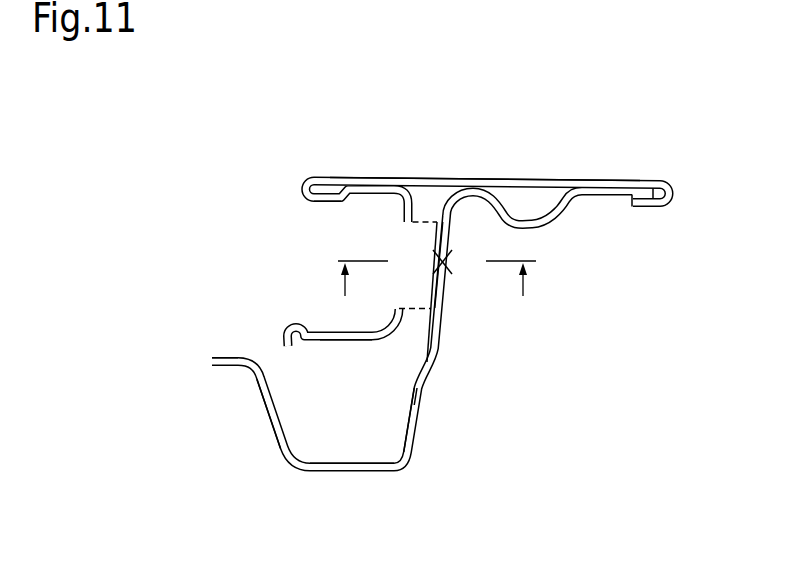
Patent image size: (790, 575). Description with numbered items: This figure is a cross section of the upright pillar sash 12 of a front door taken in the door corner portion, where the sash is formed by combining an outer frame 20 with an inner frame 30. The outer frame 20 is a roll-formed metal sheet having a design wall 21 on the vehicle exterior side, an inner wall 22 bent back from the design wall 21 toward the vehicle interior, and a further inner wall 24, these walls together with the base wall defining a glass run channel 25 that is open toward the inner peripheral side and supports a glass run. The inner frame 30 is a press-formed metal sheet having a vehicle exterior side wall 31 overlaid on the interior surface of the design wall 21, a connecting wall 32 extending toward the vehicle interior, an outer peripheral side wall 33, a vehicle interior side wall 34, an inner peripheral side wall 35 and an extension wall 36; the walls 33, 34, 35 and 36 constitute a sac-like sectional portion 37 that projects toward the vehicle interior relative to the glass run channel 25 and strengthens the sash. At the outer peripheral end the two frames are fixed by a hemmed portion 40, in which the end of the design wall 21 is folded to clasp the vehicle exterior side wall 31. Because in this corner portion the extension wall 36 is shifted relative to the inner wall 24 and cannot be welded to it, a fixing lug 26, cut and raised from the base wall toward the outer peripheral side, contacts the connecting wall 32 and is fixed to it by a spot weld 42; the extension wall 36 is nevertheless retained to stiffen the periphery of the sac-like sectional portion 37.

The upright pillar sash 12 is at (660, 154).
The outer frame 20 is at (479, 213).
The design wall 21 is at (517, 179).
The inner wall 22 is at (362, 193).
The inner wall 24 is at (330, 332).
The glass run channel 25 is at (349, 356).
The fixing lug 26 is at (436, 240).
The inner frame 30 is at (586, 208).
The vehicle exterior side wall 31 is at (619, 188).
The connecting wall 32 is at (440, 317).
The outer peripheral side wall 33 is at (413, 402).
The vehicle interior side wall 34 is at (345, 471).
The inner peripheral side wall 35 is at (268, 412).
The extension wall 36 is at (221, 358).
The sac-like sectional portion 37 is at (428, 427).
The hemmed portion 40 is at (650, 206).
The spot weld 42 is at (447, 259).